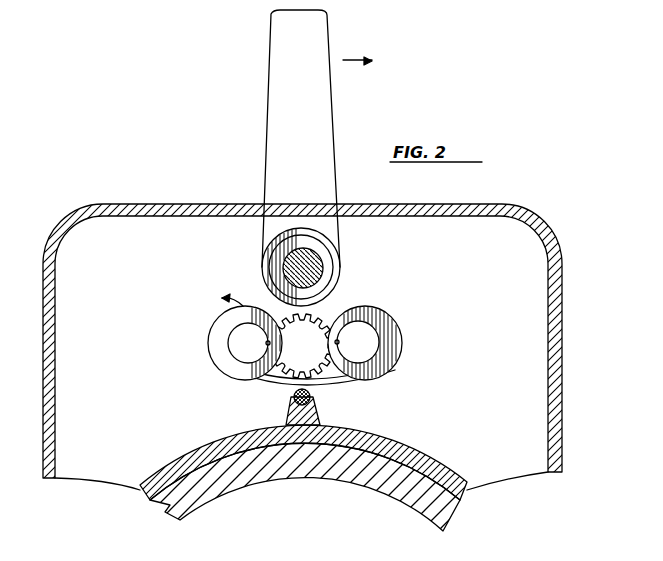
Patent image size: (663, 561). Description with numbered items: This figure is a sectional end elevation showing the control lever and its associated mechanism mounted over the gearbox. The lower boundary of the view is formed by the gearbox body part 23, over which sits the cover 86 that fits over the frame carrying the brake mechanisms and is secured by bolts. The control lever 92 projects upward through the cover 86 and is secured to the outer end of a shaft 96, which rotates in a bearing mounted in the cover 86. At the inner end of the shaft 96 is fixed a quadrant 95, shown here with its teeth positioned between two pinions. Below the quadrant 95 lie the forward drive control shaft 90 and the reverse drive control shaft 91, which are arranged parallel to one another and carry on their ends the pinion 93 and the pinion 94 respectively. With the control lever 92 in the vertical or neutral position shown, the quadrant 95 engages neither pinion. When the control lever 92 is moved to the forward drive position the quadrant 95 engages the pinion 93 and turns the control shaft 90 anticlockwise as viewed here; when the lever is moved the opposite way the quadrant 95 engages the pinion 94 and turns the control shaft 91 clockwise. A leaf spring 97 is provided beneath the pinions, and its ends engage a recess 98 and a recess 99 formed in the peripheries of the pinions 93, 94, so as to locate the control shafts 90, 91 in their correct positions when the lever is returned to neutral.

The gearbox body part 23 is at (378, 486).
The cover 86 is at (52, 338).
The forward drive control shaft 90 is at (247, 357).
The reverse drive control shaft 91 is at (368, 342).
The control lever 92 is at (266, 156).
The pinion 93 is at (245, 372).
The pinion 94 is at (395, 357).
The quadrant 95 is at (318, 298).
The shaft 96 is at (318, 278).
The leaf spring 97 is at (338, 391).
The recess 98 is at (273, 376).
The recess 99 is at (380, 377).